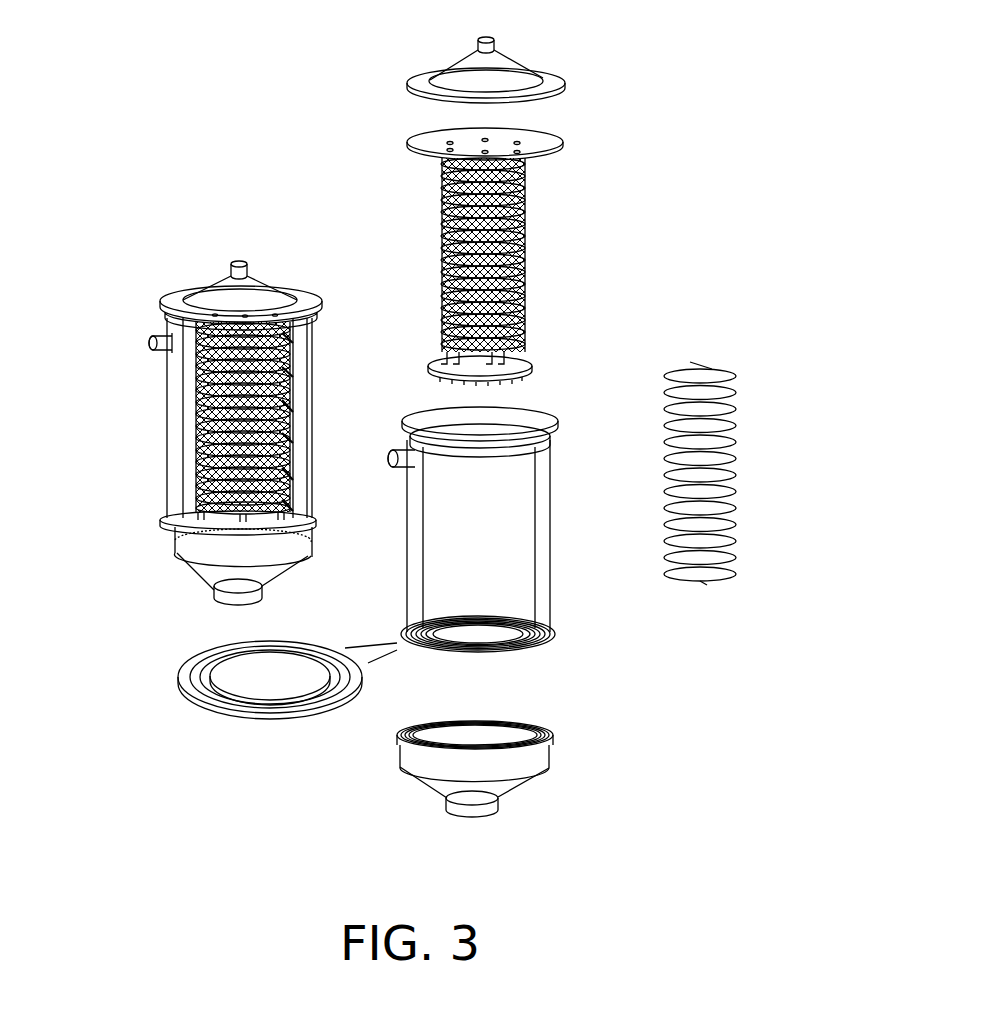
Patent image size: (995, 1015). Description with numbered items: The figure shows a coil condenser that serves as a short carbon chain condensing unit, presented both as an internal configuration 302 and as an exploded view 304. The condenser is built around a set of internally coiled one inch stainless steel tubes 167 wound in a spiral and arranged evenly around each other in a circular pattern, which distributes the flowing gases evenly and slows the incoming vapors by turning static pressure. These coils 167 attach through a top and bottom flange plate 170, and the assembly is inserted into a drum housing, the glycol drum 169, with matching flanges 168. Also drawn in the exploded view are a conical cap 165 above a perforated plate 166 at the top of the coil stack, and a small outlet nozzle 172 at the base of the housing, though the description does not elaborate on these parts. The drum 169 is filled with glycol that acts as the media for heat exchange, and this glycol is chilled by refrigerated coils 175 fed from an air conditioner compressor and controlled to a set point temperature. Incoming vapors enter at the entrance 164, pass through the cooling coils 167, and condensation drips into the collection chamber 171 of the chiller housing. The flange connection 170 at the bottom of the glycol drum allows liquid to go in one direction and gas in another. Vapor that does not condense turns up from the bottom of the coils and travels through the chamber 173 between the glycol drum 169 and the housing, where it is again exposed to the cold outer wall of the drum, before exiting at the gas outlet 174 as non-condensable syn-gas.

The internal configuration 302 is at (160, 165).
The exploded view 304 is at (700, 230).
The entrance 164 is at (240, 262).
The conical cap 165 is at (230, 284).
The perforated plate 166 is at (258, 302).
The coiled tubes 167 is at (522, 220).
The matching flange 168 is at (505, 367).
The glycol drum 169 is at (512, 573).
The flange plate 170 is at (243, 681).
The collection chamber 171 is at (166, 545).
The outlet nozzle 172 is at (212, 592).
The chamber 173 is at (300, 392).
The gas outlet 174 is at (150, 342).
The refrigerated coils 175 is at (306, 418).